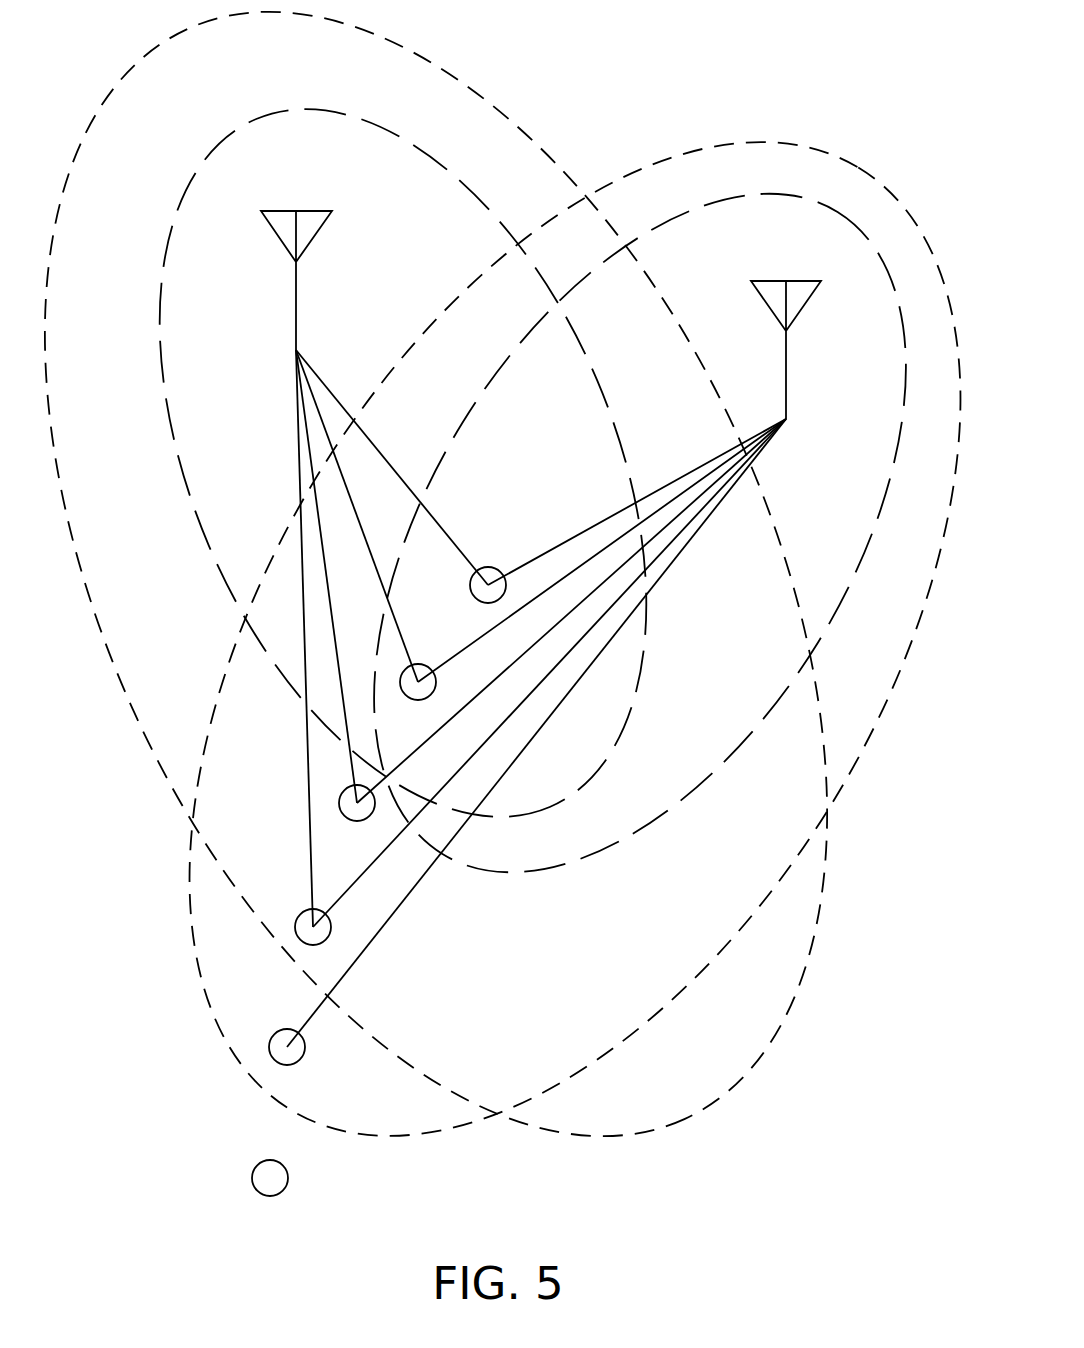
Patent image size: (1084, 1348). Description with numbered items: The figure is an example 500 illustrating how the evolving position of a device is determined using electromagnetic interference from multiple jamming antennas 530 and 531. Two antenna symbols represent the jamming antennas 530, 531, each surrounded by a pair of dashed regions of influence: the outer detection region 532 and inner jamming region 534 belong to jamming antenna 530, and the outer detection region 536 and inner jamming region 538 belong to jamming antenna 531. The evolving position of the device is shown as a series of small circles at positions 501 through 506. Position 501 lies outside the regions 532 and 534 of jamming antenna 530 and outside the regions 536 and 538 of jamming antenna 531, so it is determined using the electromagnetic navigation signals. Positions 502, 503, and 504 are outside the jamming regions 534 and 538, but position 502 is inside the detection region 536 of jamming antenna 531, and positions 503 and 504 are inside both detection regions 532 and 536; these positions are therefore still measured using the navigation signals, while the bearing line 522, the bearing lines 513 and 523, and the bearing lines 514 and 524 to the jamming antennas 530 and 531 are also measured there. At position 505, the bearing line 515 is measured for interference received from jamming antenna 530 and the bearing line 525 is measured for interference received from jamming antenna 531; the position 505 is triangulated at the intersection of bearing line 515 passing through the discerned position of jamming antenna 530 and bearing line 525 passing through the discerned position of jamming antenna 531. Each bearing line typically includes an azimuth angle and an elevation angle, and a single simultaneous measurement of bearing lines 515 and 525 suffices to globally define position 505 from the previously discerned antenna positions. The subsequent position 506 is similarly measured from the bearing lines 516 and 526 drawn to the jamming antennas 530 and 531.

The example 500 is at (78, 50).
The position 501 is at (270, 1160).
The position 502 is at (287, 1065).
The position 503 is at (313, 945).
The position 504 is at (357, 821).
The position 505 is at (418, 700).
The position 506 is at (485, 603).
The bearing line 513 is at (308, 742).
The bearing line 514 is at (331, 613).
The bearing line 515 is at (397, 620).
The bearing line 516 is at (455, 543).
The bearing line 522 is at (308, 1022).
The bearing line 523 is at (367, 870).
The bearing line 524 is at (423, 747).
The bearing line 525 is at (435, 660).
The bearing line 526 is at (567, 538).
The jamming antenna 530 is at (296, 298).
The jamming antenna 531 is at (786, 369).
The detection region 532 is at (88, 422).
The jamming region 534 is at (218, 422).
The detection region 536 is at (914, 413).
The jamming region 538 is at (821, 413).